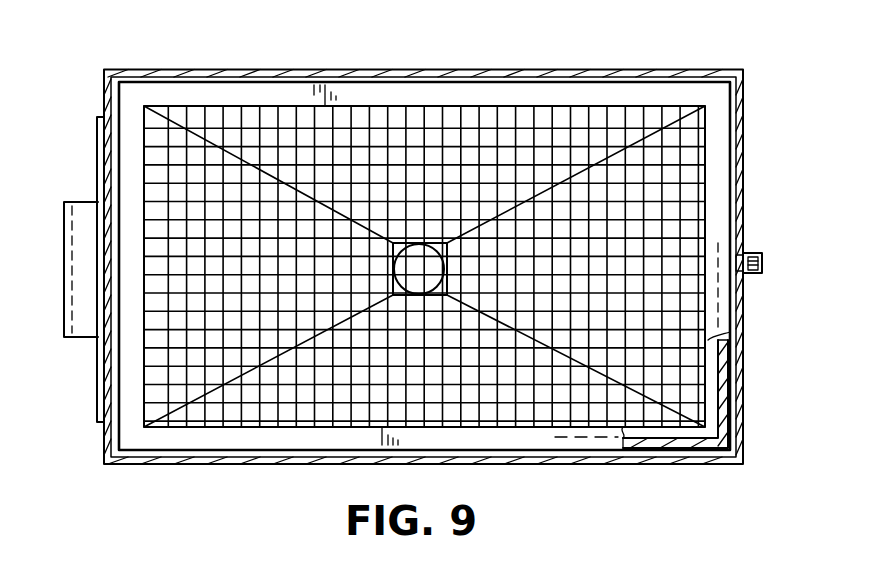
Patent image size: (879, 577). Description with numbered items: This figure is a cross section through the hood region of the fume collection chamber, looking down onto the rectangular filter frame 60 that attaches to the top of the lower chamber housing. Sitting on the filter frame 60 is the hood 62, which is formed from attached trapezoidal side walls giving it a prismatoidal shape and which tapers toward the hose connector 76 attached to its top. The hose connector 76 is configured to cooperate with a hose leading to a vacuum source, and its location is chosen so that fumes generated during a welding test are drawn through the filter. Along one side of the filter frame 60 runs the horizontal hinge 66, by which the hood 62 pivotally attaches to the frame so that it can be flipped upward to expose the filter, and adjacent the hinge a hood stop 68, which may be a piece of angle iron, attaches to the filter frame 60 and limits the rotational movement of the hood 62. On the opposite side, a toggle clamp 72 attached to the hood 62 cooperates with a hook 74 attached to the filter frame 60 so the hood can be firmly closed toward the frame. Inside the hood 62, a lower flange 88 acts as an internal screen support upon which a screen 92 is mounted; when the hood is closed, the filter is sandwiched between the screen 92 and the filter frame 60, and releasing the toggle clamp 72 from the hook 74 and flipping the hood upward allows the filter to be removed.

The filter frame 60 is at (556, 67).
The hood 62 is at (657, 82).
The horizontal hinge 66 is at (97, 178).
The hood stop 68 is at (64, 246).
The toggle clamp 72 is at (764, 253).
The hook 74 is at (762, 262).
The hose connector 76 is at (424, 290).
The lower flange 88 is at (441, 93).
The screen 92 is at (663, 360).